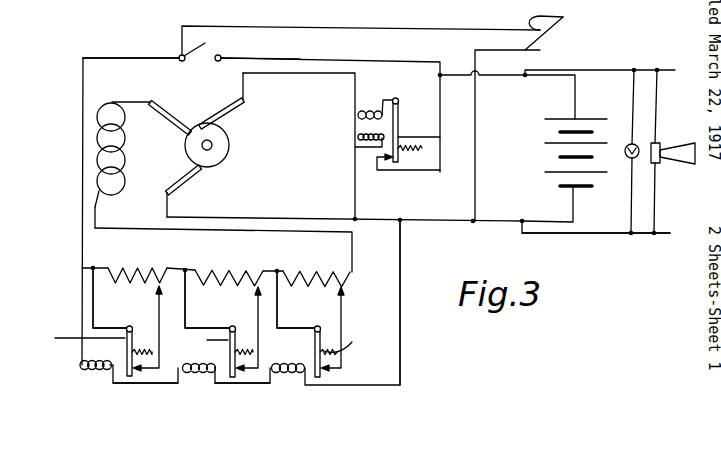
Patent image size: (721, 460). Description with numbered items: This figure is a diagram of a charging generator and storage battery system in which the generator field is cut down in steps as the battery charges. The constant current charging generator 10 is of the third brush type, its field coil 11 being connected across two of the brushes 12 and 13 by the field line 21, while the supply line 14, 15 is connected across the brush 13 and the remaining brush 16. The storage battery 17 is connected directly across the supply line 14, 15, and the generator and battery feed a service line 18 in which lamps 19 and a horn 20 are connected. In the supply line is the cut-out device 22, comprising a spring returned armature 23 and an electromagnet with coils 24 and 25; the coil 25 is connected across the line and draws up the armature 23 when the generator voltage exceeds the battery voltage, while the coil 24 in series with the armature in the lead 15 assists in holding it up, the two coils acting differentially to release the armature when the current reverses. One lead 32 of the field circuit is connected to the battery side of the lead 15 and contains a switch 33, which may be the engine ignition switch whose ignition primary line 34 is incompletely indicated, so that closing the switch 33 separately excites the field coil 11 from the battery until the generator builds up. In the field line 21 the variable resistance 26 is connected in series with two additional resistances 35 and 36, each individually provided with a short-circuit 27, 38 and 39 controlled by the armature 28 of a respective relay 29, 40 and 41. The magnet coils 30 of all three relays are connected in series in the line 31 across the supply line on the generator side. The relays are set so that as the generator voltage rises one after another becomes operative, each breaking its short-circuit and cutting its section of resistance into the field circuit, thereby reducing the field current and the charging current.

The charging generator 10 is at (220, 147).
The field coil 11 is at (125, 167).
The brush 12 is at (168, 100).
The brush 13 is at (237, 108).
The supply line 14 is at (300, 217).
The supply line lead 15 is at (318, 75).
The brush 16 is at (194, 181).
The storage battery 17 is at (568, 142).
The service line 18 is at (612, 70).
The lamps 19 is at (638, 145).
The horn 20 is at (685, 150).
The field line 21 is at (95, 213).
The cut-out device 22 is at (382, 125).
The armature 23 is at (440, 137).
The coil 24 is at (373, 111).
The coil 25 is at (357, 134).
The variable resistance 26 is at (135, 268).
The short-circuit line 27 is at (110, 327).
The armature 28 is at (203, 338).
The relay 29 is at (122, 350).
The actuating coil 30 is at (183, 373).
The line 31 is at (82, 298).
The lead 32 is at (132, 56).
The switch 33 is at (200, 48).
The ignition primary line 34 is at (560, 29).
The resistance 35 is at (233, 269).
The resistance 36 is at (318, 269).
The short-circuit 38 is at (207, 327).
The short-circuit 39 is at (293, 327).
The relay 40 is at (222, 356).
The relay 41 is at (306, 362).